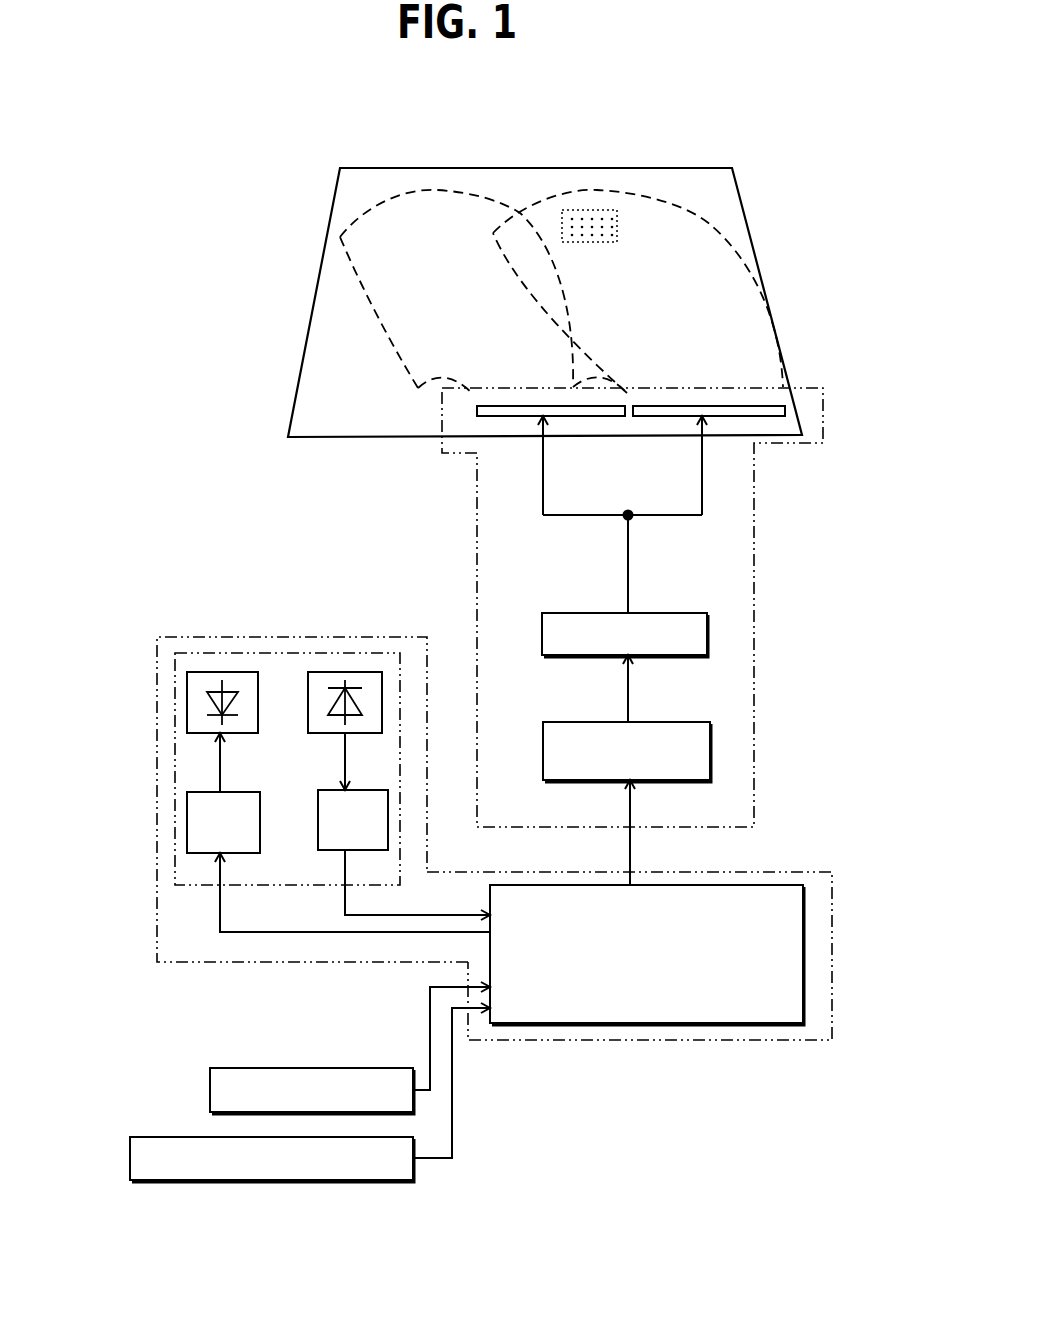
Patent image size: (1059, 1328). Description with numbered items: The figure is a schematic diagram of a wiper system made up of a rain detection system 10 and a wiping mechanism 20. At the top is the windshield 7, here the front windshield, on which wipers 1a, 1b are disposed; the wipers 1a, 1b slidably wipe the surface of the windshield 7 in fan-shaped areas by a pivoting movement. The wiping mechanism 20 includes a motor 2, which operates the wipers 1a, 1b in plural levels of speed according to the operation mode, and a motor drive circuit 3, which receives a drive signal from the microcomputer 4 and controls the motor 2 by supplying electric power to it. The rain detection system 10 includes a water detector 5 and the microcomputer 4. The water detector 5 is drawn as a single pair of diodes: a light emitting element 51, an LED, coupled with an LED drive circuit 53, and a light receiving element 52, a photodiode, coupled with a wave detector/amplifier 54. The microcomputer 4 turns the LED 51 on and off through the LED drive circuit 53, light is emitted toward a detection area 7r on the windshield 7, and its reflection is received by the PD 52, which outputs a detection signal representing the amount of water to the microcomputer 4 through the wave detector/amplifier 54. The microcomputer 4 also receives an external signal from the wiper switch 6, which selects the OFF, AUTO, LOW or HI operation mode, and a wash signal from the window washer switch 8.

The wiper 1a is at (727, 404).
The wiper 1b is at (505, 417).
The motor 2 is at (707, 632).
The motor drive circuit 3 is at (710, 748).
The microcomputer 4 is at (803, 912).
The water detector 5 is at (195, 887).
The wiper switch 6 is at (210, 1088).
The windshield 7 is at (748, 227).
The detection area 7r is at (590, 212).
The window washer switch 8 is at (268, 1180).
The rain detection system 10 is at (528, 1045).
The wiping mechanism 20 is at (748, 527).
The light emitting element 51 is at (222, 672).
The light receiving element 52 is at (330, 672).
The LED drive circuit 53 is at (187, 820).
The wave detector/amplifier 54 is at (388, 818).